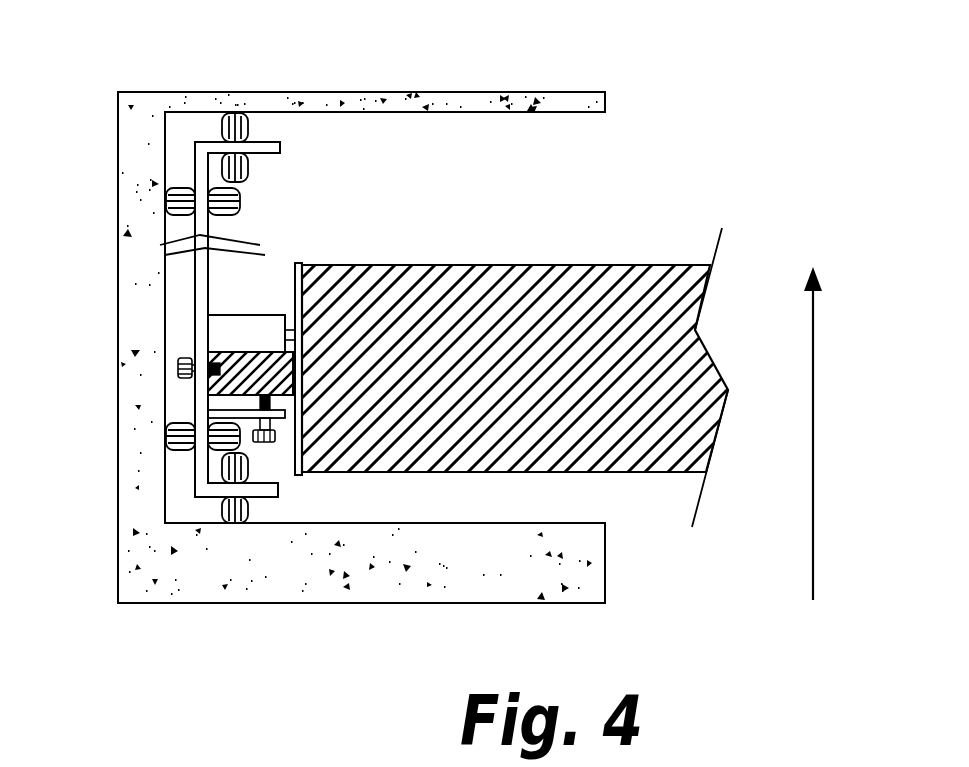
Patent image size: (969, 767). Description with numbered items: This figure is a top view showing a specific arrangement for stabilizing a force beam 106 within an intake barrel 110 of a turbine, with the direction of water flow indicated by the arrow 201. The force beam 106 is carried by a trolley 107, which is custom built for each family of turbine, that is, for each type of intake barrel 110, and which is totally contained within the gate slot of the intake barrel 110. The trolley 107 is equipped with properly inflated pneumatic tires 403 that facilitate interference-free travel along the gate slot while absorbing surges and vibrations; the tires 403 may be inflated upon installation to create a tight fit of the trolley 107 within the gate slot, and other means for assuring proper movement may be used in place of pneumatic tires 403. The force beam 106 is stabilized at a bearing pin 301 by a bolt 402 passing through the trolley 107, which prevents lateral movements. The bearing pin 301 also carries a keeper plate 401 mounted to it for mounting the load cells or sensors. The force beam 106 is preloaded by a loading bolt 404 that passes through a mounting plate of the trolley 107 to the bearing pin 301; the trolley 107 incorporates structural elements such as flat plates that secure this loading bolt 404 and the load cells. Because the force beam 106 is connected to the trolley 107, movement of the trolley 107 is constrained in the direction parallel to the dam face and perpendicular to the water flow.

The intake barrel 110 is at (490, 184).
The force beam 106 is at (662, 264).
The trolley 107 is at (284, 146).
The pneumatic tires 403 is at (217, 131).
The keeper plate 401 is at (222, 322).
The bolt 402 is at (173, 365).
The bearing pin 301 is at (230, 385).
The loading bolt 404 is at (250, 440).
The water flow direction arrow 201 is at (826, 295).